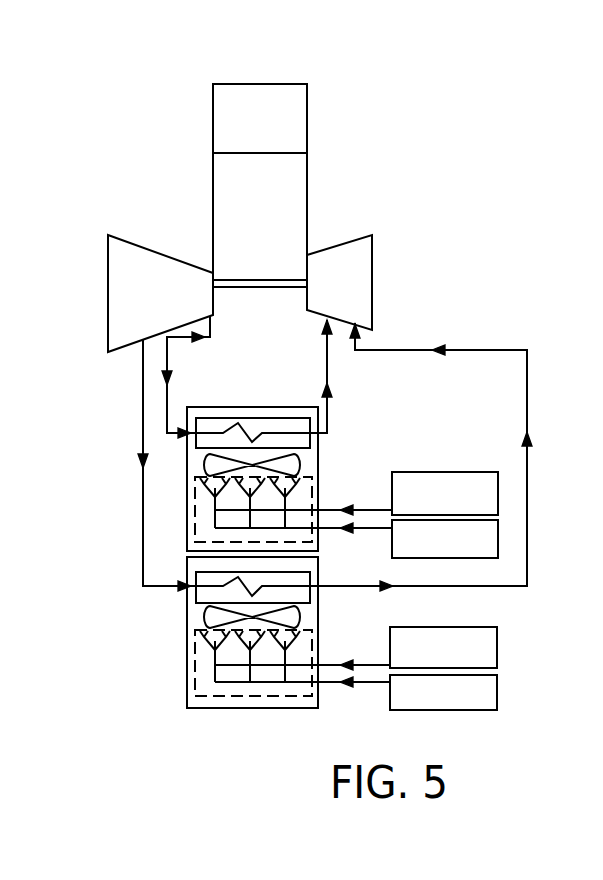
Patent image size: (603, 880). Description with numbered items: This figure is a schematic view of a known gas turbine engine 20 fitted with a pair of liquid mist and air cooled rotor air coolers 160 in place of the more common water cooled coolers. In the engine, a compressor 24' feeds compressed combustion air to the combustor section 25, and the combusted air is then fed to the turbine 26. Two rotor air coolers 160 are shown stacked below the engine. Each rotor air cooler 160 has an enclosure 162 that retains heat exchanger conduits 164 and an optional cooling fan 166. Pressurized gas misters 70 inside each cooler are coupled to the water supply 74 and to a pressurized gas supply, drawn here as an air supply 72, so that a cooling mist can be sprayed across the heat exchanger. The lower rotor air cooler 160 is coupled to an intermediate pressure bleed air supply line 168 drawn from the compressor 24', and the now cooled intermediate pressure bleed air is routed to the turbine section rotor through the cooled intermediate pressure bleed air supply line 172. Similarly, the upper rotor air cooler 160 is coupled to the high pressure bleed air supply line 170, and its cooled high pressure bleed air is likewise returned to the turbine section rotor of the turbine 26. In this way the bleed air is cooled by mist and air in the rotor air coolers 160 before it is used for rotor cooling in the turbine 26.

The gas turbine engine 20 is at (301, 218).
The compressor 24' is at (160, 269).
The combustor section 25 is at (291, 119).
The turbine 26 is at (367, 252).
The pressurized gas mister 70 is at (195, 517).
The air supply 72 is at (488, 538).
The water supply 74 is at (493, 476).
The rotor air cooler 160 is at (352, 451).
The enclosure 162 is at (319, 445).
The heat exchanger conduits 164 is at (196, 443).
The cooling fan 166 is at (196, 462).
The intermediate pressure bleed air supply line 168 is at (143, 373).
The high pressure bleed air supply line 170 is at (167, 354).
The cooled intermediate pressure bleed air supply line 172 is at (417, 350).